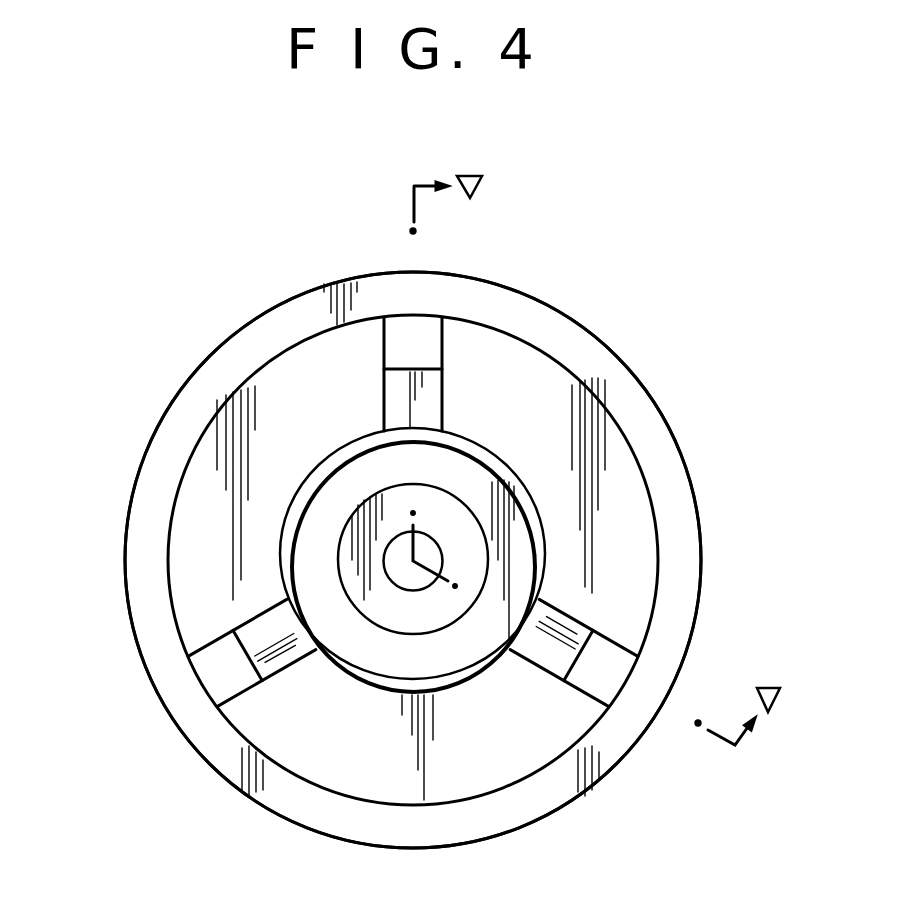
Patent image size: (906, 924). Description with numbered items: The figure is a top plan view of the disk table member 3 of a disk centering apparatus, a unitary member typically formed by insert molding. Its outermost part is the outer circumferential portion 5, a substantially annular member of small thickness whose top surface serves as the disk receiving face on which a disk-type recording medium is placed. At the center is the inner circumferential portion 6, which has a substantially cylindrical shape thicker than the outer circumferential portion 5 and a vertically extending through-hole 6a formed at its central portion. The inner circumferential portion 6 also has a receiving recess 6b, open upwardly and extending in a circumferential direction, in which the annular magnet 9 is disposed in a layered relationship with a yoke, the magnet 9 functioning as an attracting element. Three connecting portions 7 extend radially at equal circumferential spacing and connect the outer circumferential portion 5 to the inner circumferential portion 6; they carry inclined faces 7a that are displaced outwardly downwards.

The disk table member 3 is at (692, 362).
The outer circumferential portion 5 is at (672, 452).
The inner circumferential portion 6 is at (386, 692).
The through-hole 6a is at (399, 585).
The receiving recess 6b is at (336, 470).
The connecting portions 7 is at (436, 386).
The inclined faces 7a is at (436, 407).
The magnet 9 is at (450, 662).